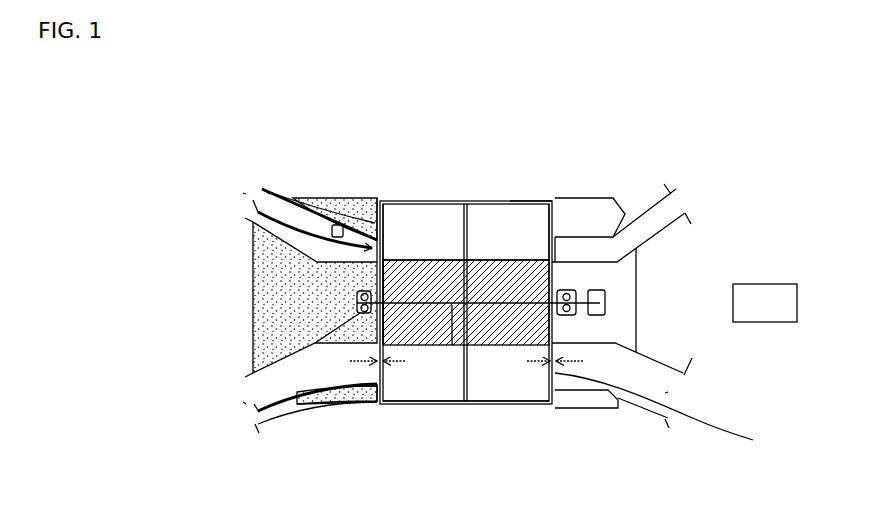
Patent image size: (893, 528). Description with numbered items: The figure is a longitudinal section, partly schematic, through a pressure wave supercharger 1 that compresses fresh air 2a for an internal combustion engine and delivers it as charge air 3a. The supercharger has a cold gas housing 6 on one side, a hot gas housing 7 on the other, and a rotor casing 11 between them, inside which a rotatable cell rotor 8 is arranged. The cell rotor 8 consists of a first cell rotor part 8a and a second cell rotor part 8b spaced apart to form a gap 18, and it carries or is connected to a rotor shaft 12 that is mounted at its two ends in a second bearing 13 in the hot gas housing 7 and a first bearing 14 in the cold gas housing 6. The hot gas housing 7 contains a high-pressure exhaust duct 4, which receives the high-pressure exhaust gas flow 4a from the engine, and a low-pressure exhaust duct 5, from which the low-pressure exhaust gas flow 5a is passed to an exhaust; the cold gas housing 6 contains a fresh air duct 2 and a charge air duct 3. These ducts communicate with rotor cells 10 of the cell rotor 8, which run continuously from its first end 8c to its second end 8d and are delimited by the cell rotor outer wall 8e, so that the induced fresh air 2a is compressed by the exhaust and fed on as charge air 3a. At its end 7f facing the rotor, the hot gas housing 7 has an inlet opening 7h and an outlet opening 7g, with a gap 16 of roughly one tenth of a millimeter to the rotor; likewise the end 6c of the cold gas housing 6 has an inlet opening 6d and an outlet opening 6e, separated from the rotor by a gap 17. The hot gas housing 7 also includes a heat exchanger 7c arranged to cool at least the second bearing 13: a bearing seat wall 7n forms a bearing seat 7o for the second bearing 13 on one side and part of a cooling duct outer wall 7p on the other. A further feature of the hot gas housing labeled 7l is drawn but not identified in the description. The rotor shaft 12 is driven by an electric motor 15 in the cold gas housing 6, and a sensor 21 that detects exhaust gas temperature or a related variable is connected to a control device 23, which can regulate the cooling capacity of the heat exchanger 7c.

The pressure wave supercharger 1 is at (683, 145).
The fresh air duct 2 is at (600, 410).
The fresh air 2a is at (668, 392).
The charge air duct 3 is at (635, 248).
The charge air 3a is at (675, 197).
The high-pressure exhaust duct 4 is at (273, 203).
The high-pressure exhaust gas flow 4a is at (243, 193).
The low-pressure exhaust duct 5 is at (258, 422).
The low-pressure exhaust gas flow 5a is at (243, 402).
The cold gas housing 6 is at (600, 417).
The end 6c is at (556, 236).
The inlet opening 6d is at (567, 383).
The outlet opening 6e is at (607, 248).
The hot gas housing 7 is at (262, 427).
The heat exchanger 7c is at (345, 215).
The end 7f is at (378, 222).
The outlet opening 7g is at (377, 383).
The inlet opening 7h is at (377, 222).
The wall portion 7l is at (265, 188).
The bearing seat wall 7n is at (360, 313).
The bearing seat 7o is at (327, 215).
The cooling duct outer wall 7p is at (357, 298).
The cell rotor 8 is at (520, 380).
The first cell rotor part 8a is at (453, 230).
The second cell rotor part 8b is at (510, 236).
The first end 8c is at (343, 403).
The second end 8d is at (666, 412).
The cell rotor outer wall 8e is at (480, 383).
The rotor cells 10 is at (458, 228).
The rotor casing 11 is at (497, 230).
The rotor shaft 12 is at (450, 347).
The second bearing 13 is at (403, 292).
The first bearing 14 is at (537, 200).
The electric motor 15 is at (605, 296).
The gap 16 is at (395, 360).
The gap 17 is at (557, 377).
The gap 18 is at (468, 383).
The sensor 21 is at (337, 225).
The control device 23 is at (757, 313).